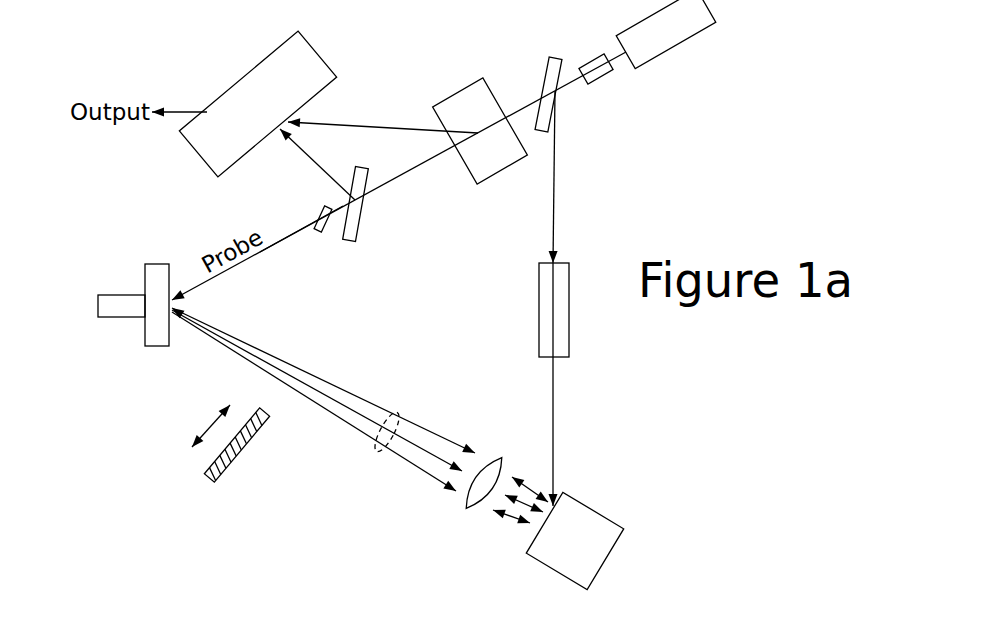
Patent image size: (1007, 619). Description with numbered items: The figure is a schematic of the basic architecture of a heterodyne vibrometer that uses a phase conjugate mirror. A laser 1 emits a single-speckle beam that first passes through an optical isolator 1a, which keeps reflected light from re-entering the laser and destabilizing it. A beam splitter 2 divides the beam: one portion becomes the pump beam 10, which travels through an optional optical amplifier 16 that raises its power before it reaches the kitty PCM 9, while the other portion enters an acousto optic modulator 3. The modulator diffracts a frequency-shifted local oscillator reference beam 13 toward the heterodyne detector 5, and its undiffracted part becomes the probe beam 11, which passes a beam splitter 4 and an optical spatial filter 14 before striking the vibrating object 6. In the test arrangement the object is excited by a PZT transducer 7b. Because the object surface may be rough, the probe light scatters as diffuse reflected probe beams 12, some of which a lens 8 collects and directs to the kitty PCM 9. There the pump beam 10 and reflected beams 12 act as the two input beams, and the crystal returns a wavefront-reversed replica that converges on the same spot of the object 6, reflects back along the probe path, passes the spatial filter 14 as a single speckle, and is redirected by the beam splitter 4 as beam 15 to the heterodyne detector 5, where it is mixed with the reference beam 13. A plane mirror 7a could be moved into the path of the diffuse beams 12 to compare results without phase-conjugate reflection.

The laser 1 is at (660, 50).
The optical isolator 1a is at (600, 74).
The beam splitter 2 is at (548, 82).
The acousto optic modulator 3 is at (457, 103).
The beam splitter 4 is at (356, 223).
The heterodyne detector 5 is at (233, 92).
The object 6 is at (163, 278).
The mirror 7a is at (223, 467).
The PZT transducer 7b is at (105, 307).
The lens 8 is at (467, 507).
The kitty PCM 9 is at (567, 554).
The pump beam 10 is at (560, 188).
The probe beam 11 is at (302, 230).
The reflected probe beams 12 is at (397, 415).
The local oscillator reference beam 13 is at (365, 130).
The optical spatial filter 14 is at (330, 233).
The backward-headed beam 15 is at (306, 160).
The optical amplifier 16 is at (560, 337).